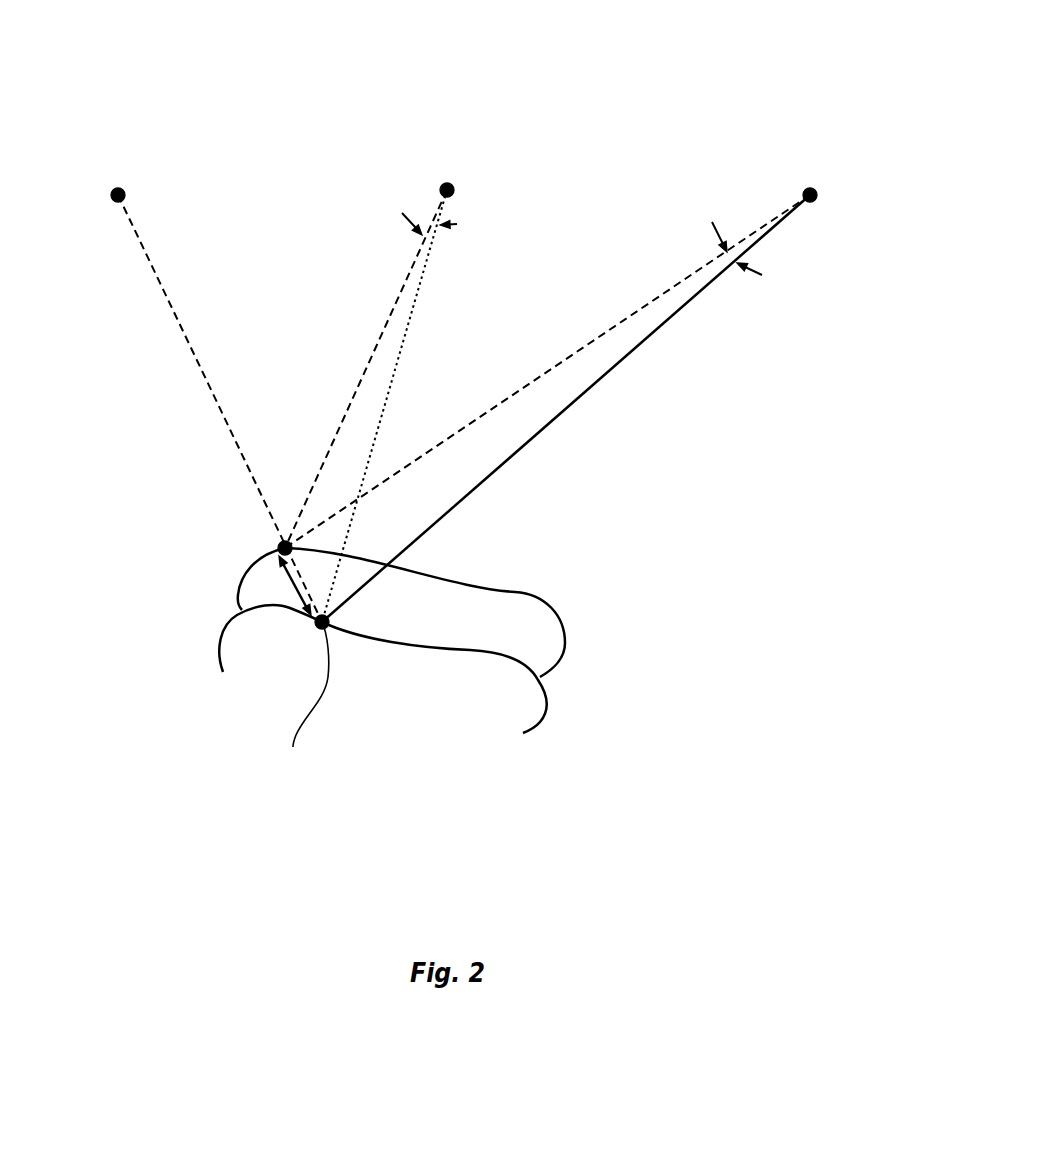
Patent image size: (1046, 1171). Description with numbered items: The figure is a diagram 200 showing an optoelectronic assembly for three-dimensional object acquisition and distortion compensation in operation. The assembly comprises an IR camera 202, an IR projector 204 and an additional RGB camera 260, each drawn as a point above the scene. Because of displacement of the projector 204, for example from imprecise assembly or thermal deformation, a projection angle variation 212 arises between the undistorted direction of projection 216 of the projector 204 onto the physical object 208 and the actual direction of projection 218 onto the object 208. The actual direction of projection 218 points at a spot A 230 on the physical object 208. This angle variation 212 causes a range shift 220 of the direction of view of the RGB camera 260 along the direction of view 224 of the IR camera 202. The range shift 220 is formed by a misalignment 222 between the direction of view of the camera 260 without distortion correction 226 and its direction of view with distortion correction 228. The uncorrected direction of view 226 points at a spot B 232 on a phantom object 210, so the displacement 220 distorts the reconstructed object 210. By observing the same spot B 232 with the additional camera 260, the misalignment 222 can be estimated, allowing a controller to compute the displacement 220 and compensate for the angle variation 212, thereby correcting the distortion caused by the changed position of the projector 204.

The diagram 200 is at (492, 60).
The camera 202 is at (127, 192).
The projector 204 is at (815, 200).
The physical object 208 is at (563, 658).
The phantom object 210 is at (543, 718).
The projection angle variation 212 is at (797, 290).
The undistorted direction of projection 216 is at (580, 395).
The actual direction of projection 218 is at (528, 380).
The range shift 220 is at (300, 597).
The misalignment 222 is at (490, 223).
The direction of view of camera 224 is at (225, 428).
The direction of view without distortion correction 226 is at (355, 512).
The direction of view with distortion correction 228 is at (397, 293).
The spot A 230 is at (270, 552).
The spot B 232 is at (311, 709).
The camera 260 is at (455, 190).